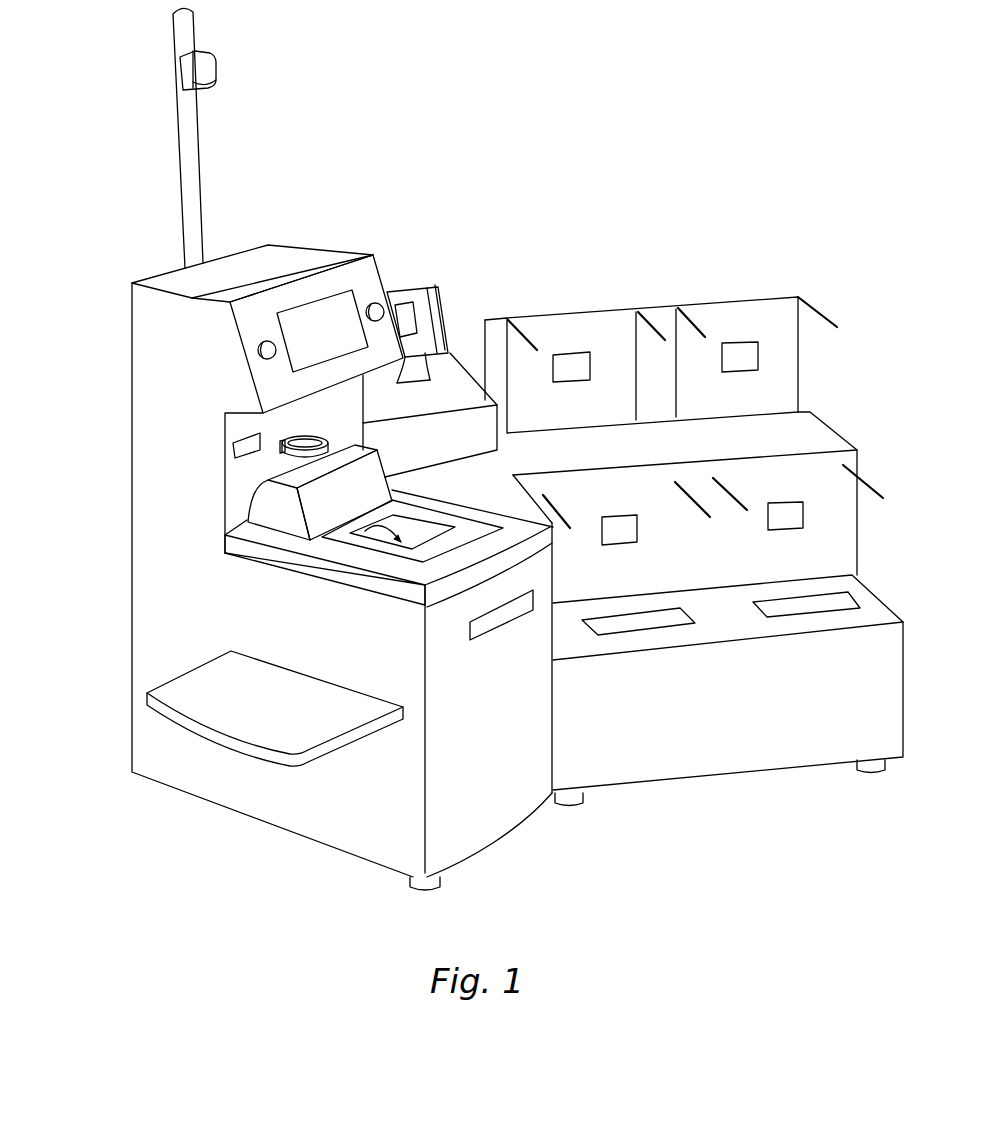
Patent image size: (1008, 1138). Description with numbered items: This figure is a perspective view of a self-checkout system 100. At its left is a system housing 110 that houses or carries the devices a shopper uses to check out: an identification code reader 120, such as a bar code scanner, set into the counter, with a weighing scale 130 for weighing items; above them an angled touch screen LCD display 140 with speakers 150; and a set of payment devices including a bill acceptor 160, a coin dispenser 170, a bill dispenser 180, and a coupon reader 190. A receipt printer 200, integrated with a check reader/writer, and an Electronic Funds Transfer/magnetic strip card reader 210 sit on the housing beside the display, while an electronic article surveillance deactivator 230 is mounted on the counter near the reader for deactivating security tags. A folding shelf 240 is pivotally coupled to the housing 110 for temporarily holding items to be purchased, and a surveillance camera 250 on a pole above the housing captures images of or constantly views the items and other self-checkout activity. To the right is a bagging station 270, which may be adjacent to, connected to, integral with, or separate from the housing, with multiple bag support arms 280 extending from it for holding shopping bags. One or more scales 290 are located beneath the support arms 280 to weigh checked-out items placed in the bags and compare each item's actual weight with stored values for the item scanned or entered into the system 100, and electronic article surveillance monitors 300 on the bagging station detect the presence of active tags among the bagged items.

The self-checkout system 100 is at (434, 162).
The system housing 110 is at (112, 559).
The identification code reader 120 is at (368, 531).
The weighing scale 130 is at (423, 556).
The touch screen LCD display 140 is at (305, 330).
The speaker 150 is at (367, 257).
The bill acceptor 160 is at (233, 455).
The coin dispenser 170 is at (283, 452).
The bill dispenser 180 is at (490, 622).
The coupon reader 190 is at (258, 423).
The receipt printer 200 is at (440, 378).
The Electronic Funds Transfer/magnetic strip card reader 210 is at (440, 308).
The electronic article surveillance deactivator 230 is at (320, 502).
The folding shelf 240 is at (287, 742).
The surveillance camera 250 is at (182, 63).
The bagging station 270 is at (778, 268).
The bag support arms 280 is at (692, 318).
The scales 290 is at (838, 602).
The electronic article surveillance monitors 300 is at (790, 507).